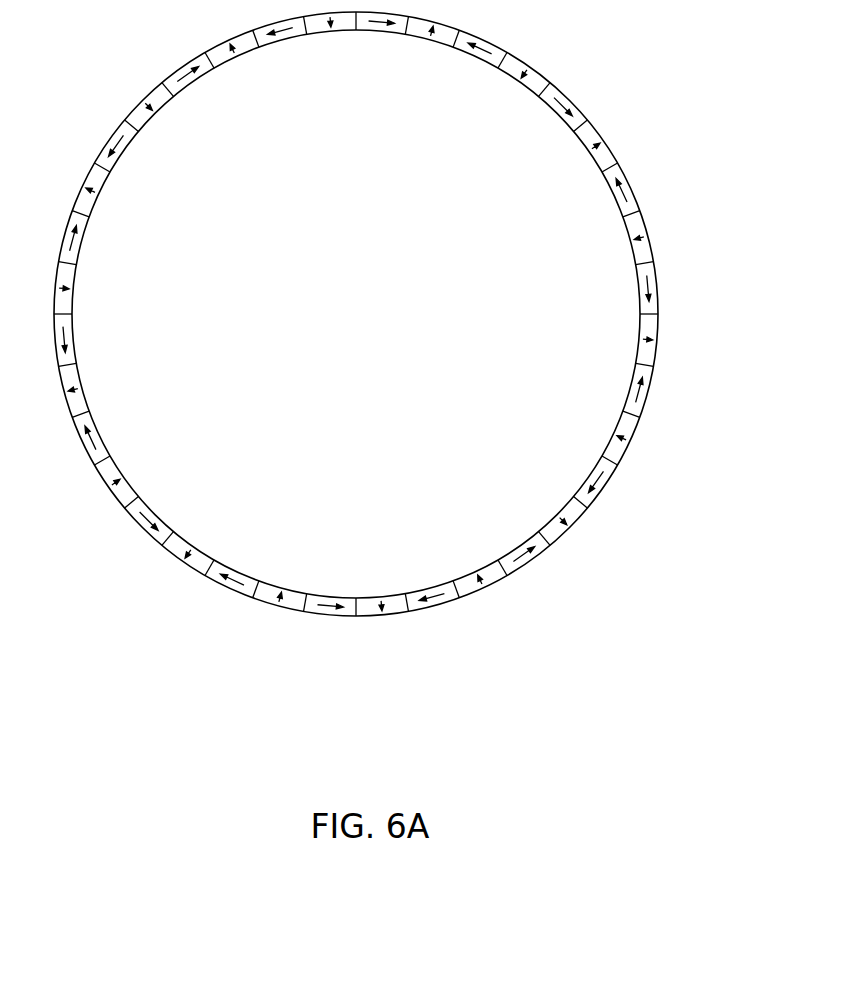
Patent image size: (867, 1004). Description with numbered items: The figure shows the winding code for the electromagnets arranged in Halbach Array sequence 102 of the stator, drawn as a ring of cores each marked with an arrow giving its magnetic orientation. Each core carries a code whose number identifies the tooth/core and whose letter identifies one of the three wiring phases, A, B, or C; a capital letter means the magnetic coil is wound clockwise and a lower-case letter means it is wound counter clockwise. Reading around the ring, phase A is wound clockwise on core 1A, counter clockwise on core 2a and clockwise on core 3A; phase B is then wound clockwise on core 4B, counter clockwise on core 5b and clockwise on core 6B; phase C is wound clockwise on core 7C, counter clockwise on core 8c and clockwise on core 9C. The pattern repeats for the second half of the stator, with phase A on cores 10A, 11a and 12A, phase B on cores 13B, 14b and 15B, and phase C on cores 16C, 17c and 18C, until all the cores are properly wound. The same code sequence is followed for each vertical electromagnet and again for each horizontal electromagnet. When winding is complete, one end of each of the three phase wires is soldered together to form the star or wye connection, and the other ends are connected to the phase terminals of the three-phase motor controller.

The electromagnets arranged in Halbach Array sequence 102 is at (581, 123).
The core 1, phase A clockwise winding 1A is at (413, 42).
The core 2, phase A counter-clockwise winding 2a is at (508, 76).
The core 3, phase A clockwise winding 3A is at (584, 136).
The core 4, phase B clockwise winding 4B is at (628, 220).
The core 5, phase B counter-clockwise winding 5b is at (633, 320).
The core 6, phase B clockwise winding 6B is at (614, 421).
The core 7, phase C clockwise winding 7C is at (570, 507).
The core 8, phase C counter-clockwise winding 8c is at (494, 570).
The core 9, phase C clockwise winding 9C is at (400, 593).
The core 10, phase A clockwise winding 10A is at (298, 586).
The core 11, phase A counter-clockwise winding 11a is at (203, 555).
The core 12, phase A clockwise winding 12A is at (126, 494).
The core 13, phase B clockwise winding 13B is at (89, 406).
The core 14, phase B counter-clockwise winding 14b is at (81, 307).
The core 15, phase B clockwise winding 15B is at (97, 207).
The core 16, phase C clockwise winding 16C is at (145, 120).
The core 17, phase C counter-clockwise winding 17c is at (217, 58).
The core 18, phase C clockwise winding 18C is at (311, 36).